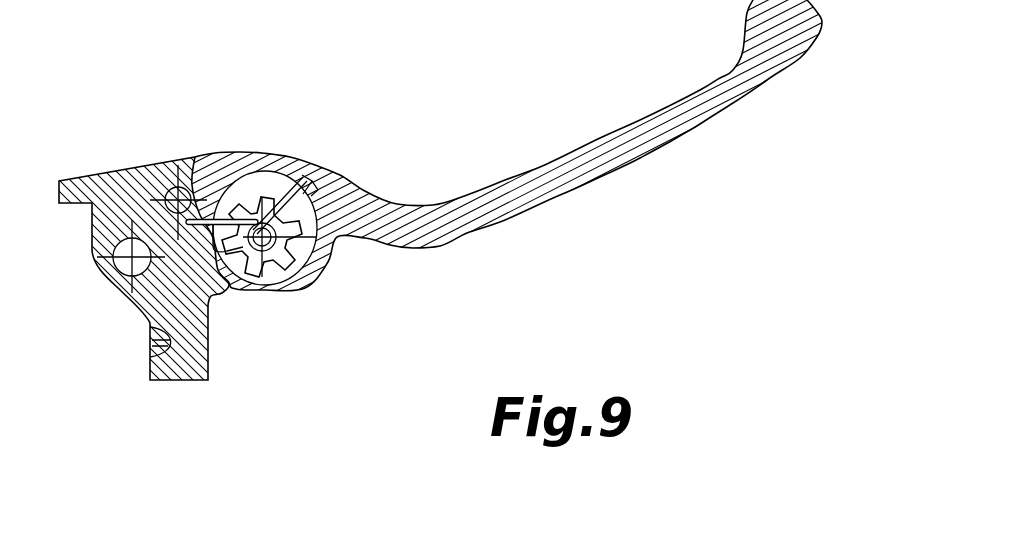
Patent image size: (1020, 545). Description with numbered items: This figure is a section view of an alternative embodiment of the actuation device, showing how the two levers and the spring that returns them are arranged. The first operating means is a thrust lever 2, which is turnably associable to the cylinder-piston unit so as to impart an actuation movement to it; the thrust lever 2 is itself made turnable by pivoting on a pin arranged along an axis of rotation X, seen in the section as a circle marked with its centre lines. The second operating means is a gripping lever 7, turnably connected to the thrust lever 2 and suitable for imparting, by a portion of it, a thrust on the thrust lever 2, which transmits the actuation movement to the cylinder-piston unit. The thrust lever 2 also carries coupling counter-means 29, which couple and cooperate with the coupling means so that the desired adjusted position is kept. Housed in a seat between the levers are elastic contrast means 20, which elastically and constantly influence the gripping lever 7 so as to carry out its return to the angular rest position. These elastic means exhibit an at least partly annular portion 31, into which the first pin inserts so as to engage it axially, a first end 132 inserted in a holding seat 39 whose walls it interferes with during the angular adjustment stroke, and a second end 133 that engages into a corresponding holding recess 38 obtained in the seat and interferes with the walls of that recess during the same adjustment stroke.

The thrust lever 2 is at (118, 168).
The gripping lever 7 is at (678, 137).
The elastic contrast means 20 is at (262, 178).
The coupling counter-means 29 is at (229, 283).
The at least partly annular portion 31 is at (292, 249).
The holding recess 38 is at (318, 200).
The holding seat 39 is at (196, 222).
The first end 132 is at (188, 158).
The second end 133 is at (304, 165).
The axis of rotation X is at (128, 272).